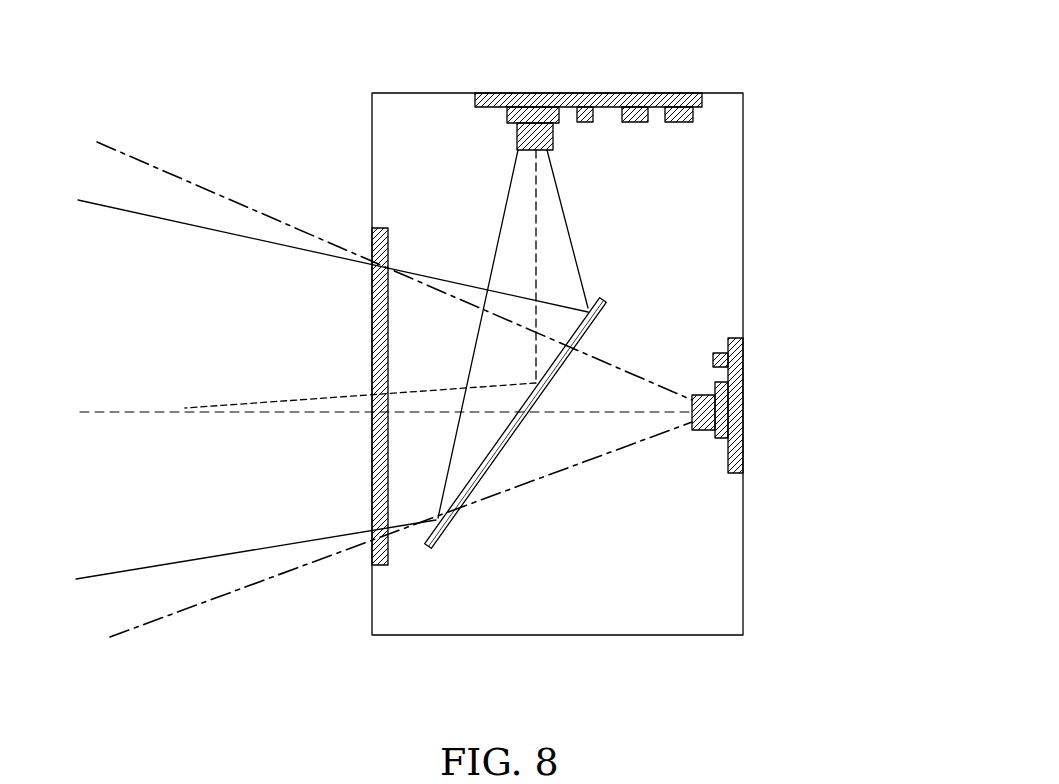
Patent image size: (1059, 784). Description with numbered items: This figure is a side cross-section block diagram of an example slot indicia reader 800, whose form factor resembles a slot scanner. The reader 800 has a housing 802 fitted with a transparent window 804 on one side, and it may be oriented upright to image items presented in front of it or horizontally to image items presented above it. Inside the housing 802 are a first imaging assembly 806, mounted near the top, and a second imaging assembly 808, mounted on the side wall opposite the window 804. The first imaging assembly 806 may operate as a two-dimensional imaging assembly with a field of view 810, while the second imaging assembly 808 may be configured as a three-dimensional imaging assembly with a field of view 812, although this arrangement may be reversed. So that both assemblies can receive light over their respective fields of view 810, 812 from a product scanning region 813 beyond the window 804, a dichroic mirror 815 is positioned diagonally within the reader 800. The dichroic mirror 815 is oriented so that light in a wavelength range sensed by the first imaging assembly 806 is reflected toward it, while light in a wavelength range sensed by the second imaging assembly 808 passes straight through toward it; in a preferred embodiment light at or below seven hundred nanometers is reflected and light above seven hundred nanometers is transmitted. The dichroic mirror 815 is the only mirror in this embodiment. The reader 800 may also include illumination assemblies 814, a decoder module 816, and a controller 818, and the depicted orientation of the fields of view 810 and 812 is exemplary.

The indicia reader 800 is at (760, 56).
The housing 802 is at (747, 205).
The transparent window 804 is at (378, 565).
The first imaging assembly 806 is at (481, 137).
The second imaging assembly 808 is at (699, 472).
The field of view 810 is at (511, 213).
The field of view 812 is at (645, 377).
The product scanning region 813 is at (243, 341).
The illumination assemblies 814 is at (585, 122).
The dichroic mirror 815 is at (440, 540).
The decoder module 816 is at (636, 93).
The controller 818 is at (680, 122).